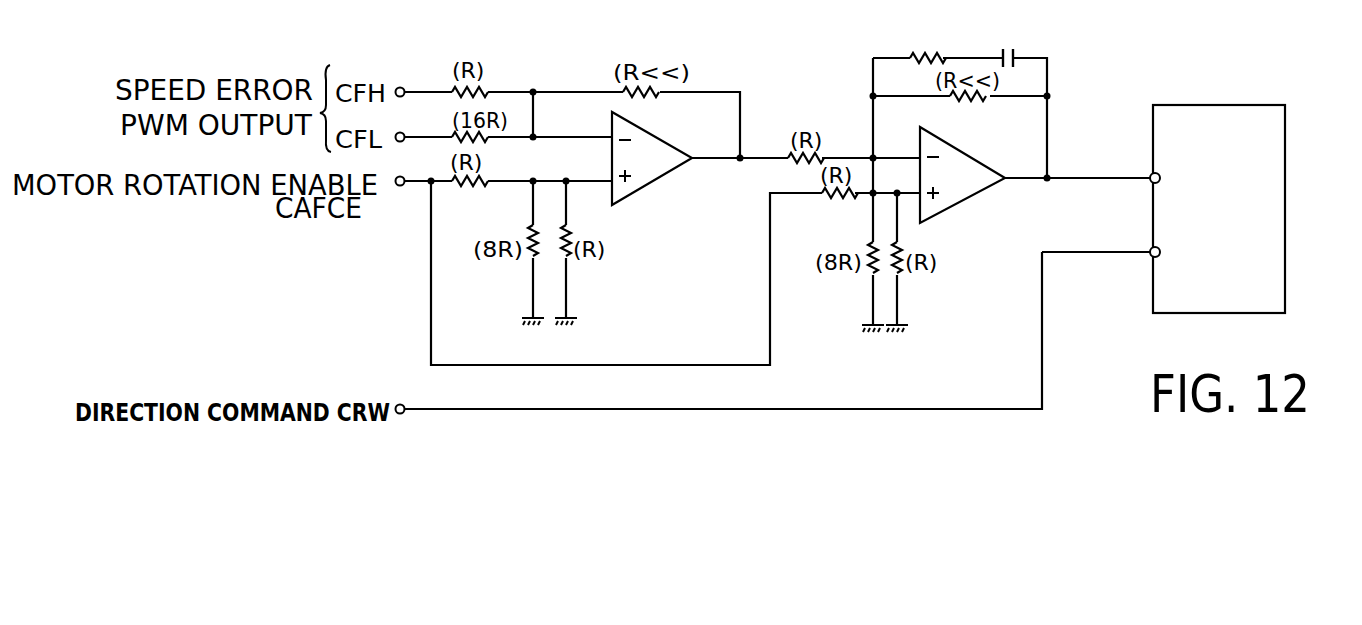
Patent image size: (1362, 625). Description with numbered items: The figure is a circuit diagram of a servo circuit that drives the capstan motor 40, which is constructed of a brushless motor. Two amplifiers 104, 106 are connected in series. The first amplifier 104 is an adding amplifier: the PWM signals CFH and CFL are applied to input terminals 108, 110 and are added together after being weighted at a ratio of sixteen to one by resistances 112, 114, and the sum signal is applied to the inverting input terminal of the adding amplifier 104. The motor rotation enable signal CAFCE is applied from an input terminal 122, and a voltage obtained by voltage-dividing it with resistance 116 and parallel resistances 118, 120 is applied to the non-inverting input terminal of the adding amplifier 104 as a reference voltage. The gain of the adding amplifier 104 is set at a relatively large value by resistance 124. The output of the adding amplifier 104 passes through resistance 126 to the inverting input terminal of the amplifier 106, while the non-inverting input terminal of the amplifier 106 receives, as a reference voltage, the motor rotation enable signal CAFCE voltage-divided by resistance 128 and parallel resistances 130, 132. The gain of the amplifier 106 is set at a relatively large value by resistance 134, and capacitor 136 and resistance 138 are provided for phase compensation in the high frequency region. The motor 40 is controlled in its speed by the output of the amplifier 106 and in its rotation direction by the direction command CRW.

The capstan motor 40 is at (1287, 192).
The adding amplifier 104 is at (660, 190).
The amplifier 106 is at (967, 208).
The input terminal 108 is at (404, 86).
The input terminal 110 is at (407, 118).
The resistance 112 is at (488, 92).
The resistance 114 is at (490, 139).
The resistance 116 is at (469, 186).
The resistance 118 is at (528, 258).
The resistance 120 is at (568, 258).
The input terminal 122 is at (402, 186).
The resistance 124 is at (662, 92).
The resistor R 126 is at (822, 158).
The resistance 128 is at (842, 197).
The resistance 130 is at (868, 270).
The resistance 132 is at (900, 270).
The resistance 134 is at (968, 100).
The capacitor 136 is at (1014, 56).
The resistance 138 is at (936, 58).